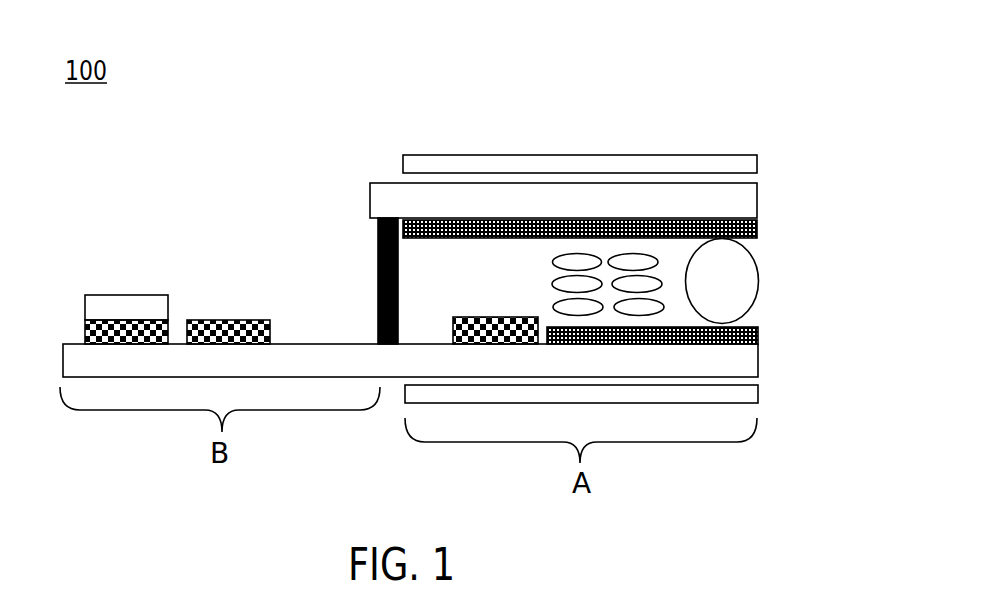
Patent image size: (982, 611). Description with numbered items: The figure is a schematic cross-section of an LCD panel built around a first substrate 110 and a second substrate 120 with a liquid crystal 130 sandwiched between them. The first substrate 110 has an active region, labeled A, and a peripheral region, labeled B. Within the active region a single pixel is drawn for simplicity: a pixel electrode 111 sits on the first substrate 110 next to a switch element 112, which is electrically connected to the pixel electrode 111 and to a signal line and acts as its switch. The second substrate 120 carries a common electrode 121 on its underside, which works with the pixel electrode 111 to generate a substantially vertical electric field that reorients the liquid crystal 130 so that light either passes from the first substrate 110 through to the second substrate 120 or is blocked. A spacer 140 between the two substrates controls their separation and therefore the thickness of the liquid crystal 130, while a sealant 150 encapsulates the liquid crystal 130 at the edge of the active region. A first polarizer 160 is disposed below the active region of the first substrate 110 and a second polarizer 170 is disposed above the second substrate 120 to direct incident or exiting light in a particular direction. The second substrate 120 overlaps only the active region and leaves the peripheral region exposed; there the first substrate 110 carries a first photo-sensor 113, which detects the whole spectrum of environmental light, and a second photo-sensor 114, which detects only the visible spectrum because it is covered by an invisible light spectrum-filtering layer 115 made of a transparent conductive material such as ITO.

The first substrate 110 is at (410, 360).
The pixel electrode 111 is at (758, 333).
The switch element 112 is at (455, 323).
The first photo-sensor 113 is at (228, 320).
The second photo-sensor 114 is at (85, 338).
The invisible light spectrum-filtering layer 115 is at (107, 302).
The second substrate 120 is at (563, 200).
The common electrode 121 is at (757, 226).
The liquid crystal 130 is at (555, 302).
The spacer 140 is at (722, 281).
The sealant 150 is at (378, 245).
The first polarizer 160 is at (758, 395).
The second polarizer 170 is at (757, 158).